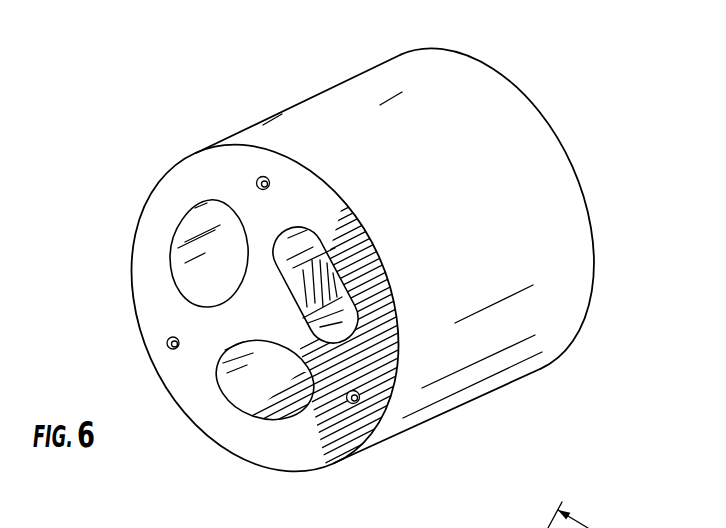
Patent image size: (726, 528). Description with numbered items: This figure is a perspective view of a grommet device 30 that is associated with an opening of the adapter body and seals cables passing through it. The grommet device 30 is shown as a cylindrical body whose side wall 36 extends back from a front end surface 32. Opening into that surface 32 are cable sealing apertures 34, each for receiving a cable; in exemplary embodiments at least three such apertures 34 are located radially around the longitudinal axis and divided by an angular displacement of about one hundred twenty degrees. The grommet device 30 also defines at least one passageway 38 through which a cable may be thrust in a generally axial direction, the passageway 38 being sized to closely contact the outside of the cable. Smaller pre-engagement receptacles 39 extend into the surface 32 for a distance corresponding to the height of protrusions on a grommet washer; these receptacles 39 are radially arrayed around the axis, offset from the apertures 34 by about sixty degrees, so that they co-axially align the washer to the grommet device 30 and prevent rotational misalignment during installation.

The grommet device 30 is at (177, 121).
The surface 32 is at (163, 215).
The cable sealing aperture 34 is at (185, 300).
The cylindrical side wall 36 is at (475, 238).
The passageway 38 is at (258, 391).
The pre-engagement receptacle 39 is at (266, 177).